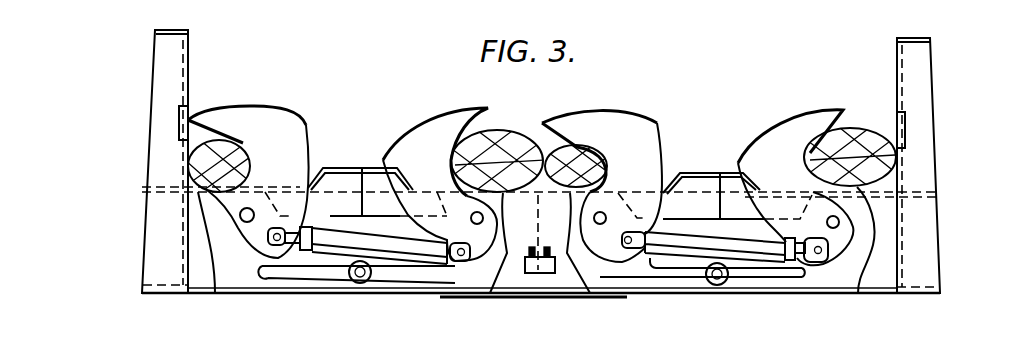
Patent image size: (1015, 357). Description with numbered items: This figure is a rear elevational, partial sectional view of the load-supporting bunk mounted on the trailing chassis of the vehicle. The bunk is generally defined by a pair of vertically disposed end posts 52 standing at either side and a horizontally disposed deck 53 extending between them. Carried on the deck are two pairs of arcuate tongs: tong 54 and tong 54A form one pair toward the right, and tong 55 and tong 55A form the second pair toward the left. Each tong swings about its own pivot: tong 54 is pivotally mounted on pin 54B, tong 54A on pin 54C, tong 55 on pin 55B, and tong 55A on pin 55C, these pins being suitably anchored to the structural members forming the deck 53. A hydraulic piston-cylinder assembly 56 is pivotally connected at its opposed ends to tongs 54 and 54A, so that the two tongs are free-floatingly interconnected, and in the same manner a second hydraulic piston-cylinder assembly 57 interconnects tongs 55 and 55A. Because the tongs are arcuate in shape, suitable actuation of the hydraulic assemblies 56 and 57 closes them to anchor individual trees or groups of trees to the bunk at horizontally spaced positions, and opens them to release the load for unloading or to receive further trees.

The end posts 52 is at (188, 52).
The deck 53 is at (545, 190).
The tong 54 is at (792, 126).
The tong 54A is at (643, 123).
The pin 54B is at (840, 222).
The pin 54C is at (600, 224).
The tong 55 is at (421, 125).
The tong 55A is at (293, 121).
The pin 55B is at (477, 224).
The pin 55C is at (240, 216).
The hydraulic piston-cylinder assembly 56 is at (767, 250).
The hydraulic piston-cylinder assembly 57 is at (403, 247).